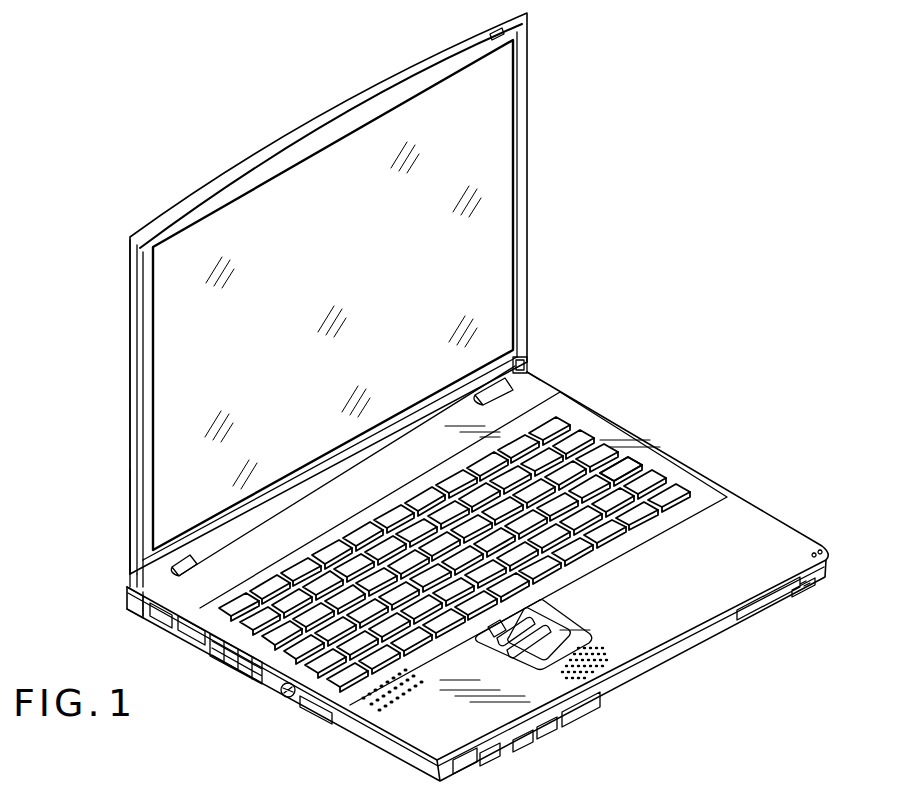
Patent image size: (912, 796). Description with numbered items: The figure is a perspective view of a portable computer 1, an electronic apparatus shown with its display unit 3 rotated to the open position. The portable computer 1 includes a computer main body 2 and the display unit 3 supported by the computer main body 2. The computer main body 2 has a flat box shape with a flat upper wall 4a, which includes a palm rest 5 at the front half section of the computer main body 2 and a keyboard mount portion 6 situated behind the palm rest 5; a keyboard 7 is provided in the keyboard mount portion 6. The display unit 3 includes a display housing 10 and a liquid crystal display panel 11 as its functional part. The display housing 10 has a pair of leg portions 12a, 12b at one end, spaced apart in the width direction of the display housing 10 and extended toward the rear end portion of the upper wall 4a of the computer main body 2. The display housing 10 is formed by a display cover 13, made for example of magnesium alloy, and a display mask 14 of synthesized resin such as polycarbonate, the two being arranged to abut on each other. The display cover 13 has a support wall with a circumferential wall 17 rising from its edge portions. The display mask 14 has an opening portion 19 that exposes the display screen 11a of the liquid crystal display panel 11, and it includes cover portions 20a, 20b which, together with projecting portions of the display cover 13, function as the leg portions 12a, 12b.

The portable computer 1 is at (702, 276).
The computer main body 2 is at (756, 518).
The display unit 3 is at (530, 165).
The upper wall 4a is at (382, 486).
The palm rest 5 is at (632, 632).
The keyboard mount portion 6 is at (615, 444).
The keyboard 7 is at (633, 536).
The display housing 10 is at (78, 258).
The liquid crystal display panel 11 is at (500, 258).
The display screen 11a is at (343, 315).
The leg portion 12a is at (128, 568).
The leg portion 12b is at (530, 352).
The display cover 13 is at (131, 290).
The display mask 14 is at (146, 354).
The circumferential wall 17 is at (135, 482).
The opening portion 19 is at (505, 96).
The cover portion 20a is at (128, 604).
The cover portion 20b is at (533, 376).